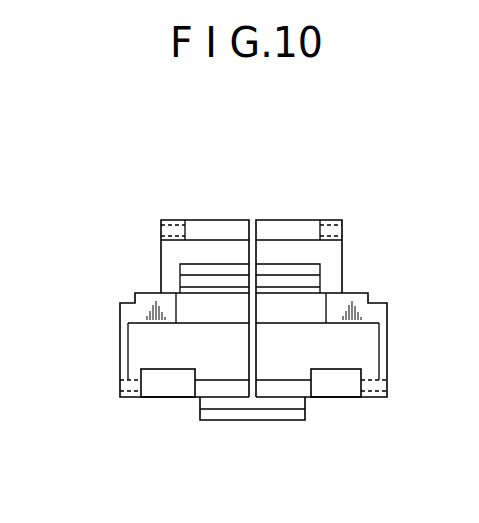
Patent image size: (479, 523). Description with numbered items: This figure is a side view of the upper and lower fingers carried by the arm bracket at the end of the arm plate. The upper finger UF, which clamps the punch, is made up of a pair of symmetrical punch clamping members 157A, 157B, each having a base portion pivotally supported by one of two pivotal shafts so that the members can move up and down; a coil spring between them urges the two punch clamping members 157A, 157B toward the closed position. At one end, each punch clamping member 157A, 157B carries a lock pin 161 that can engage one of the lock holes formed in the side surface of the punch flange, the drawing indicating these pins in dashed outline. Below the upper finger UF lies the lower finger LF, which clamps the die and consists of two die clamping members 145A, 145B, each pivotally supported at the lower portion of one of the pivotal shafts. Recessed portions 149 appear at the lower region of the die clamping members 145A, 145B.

The punch clamping member 157A is at (163, 252).
The punch clamping member 157B is at (333, 251).
The lock pin 161 is at (187, 235).
The upper finger UF is at (288, 213).
The lower finger LF is at (130, 294).
The die clamping member 145A is at (120, 313).
The die clamping member 145B is at (387, 312).
The engaging recess 149 is at (143, 384).